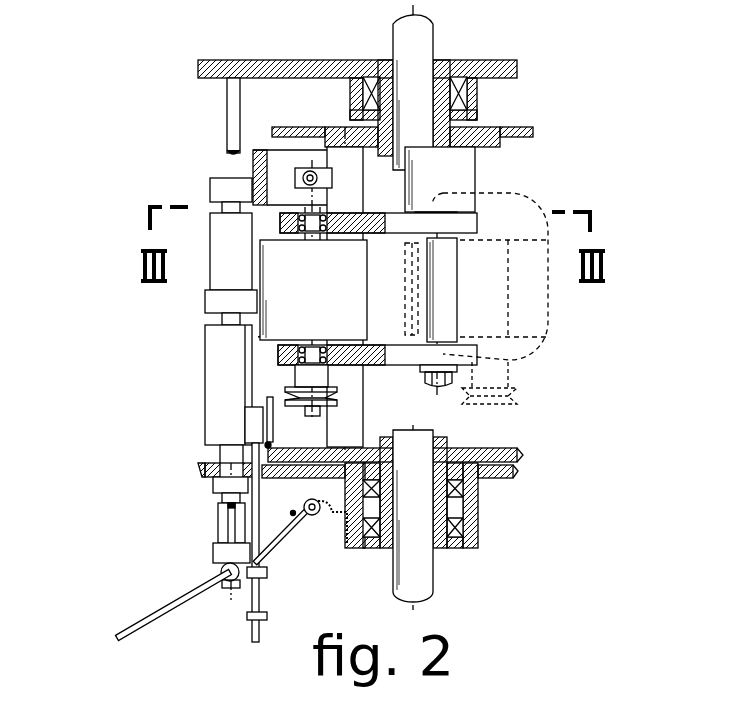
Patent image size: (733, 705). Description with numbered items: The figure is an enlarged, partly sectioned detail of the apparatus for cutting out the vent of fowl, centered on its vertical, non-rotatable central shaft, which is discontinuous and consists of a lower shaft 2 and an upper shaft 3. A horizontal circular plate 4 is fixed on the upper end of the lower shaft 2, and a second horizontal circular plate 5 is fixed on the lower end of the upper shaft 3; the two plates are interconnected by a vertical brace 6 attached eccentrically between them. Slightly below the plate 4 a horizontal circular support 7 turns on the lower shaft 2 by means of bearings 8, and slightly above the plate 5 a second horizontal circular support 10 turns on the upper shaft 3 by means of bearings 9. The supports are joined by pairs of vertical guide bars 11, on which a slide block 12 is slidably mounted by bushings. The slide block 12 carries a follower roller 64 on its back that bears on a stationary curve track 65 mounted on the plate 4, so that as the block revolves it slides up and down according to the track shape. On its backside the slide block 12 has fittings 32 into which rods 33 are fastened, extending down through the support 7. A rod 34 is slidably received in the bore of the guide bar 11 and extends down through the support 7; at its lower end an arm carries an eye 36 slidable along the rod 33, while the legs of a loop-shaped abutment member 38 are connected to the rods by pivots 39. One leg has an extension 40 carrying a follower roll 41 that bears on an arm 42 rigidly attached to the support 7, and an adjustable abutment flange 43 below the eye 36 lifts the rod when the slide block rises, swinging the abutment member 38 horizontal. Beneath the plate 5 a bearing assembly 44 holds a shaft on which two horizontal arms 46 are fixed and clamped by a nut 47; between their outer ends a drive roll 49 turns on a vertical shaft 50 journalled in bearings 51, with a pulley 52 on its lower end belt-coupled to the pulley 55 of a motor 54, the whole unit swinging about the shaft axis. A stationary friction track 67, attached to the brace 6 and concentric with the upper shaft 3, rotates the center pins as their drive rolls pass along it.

The lower shaft 2 is at (433, 578).
The upper shaft 3 is at (437, 42).
The horizontal circular plate 4 is at (522, 453).
The second horizontal circular plate 5 is at (495, 143).
The vertical brace 6 is at (355, 178).
The horizontal circular support 7 is at (515, 475).
The bearings 8 is at (455, 485).
The bearings 9 is at (462, 95).
The second horizontal circular support 10 is at (517, 72).
The guide bars 11 is at (222, 113).
The slide block 12 is at (215, 383).
The fittings 32 is at (255, 424).
The rods 33 is at (260, 598).
The rod 34 is at (230, 525).
The eye 36 is at (268, 573).
The loop-shaped abutment member 38 is at (172, 607).
The pivots 39 is at (220, 572).
The extension 40 is at (282, 533).
The follower roll 41 is at (305, 500).
The arm 42 is at (332, 520).
The adjustable abutment flange 43 is at (268, 617).
The bearing assembly 44 is at (457, 170).
The horizontal arms 46 is at (400, 347).
The nut 47 is at (425, 385).
The drive roll 49 is at (283, 271).
The vertical shaft 50 is at (300, 327).
The bearings 51 is at (280, 350).
The pulley 52 is at (335, 398).
The motor 54 is at (532, 298).
The pulley 55 is at (510, 397).
The follower roller 64 is at (257, 403).
The stationary curve track 65 is at (247, 448).
The stationary friction track 67 is at (253, 160).